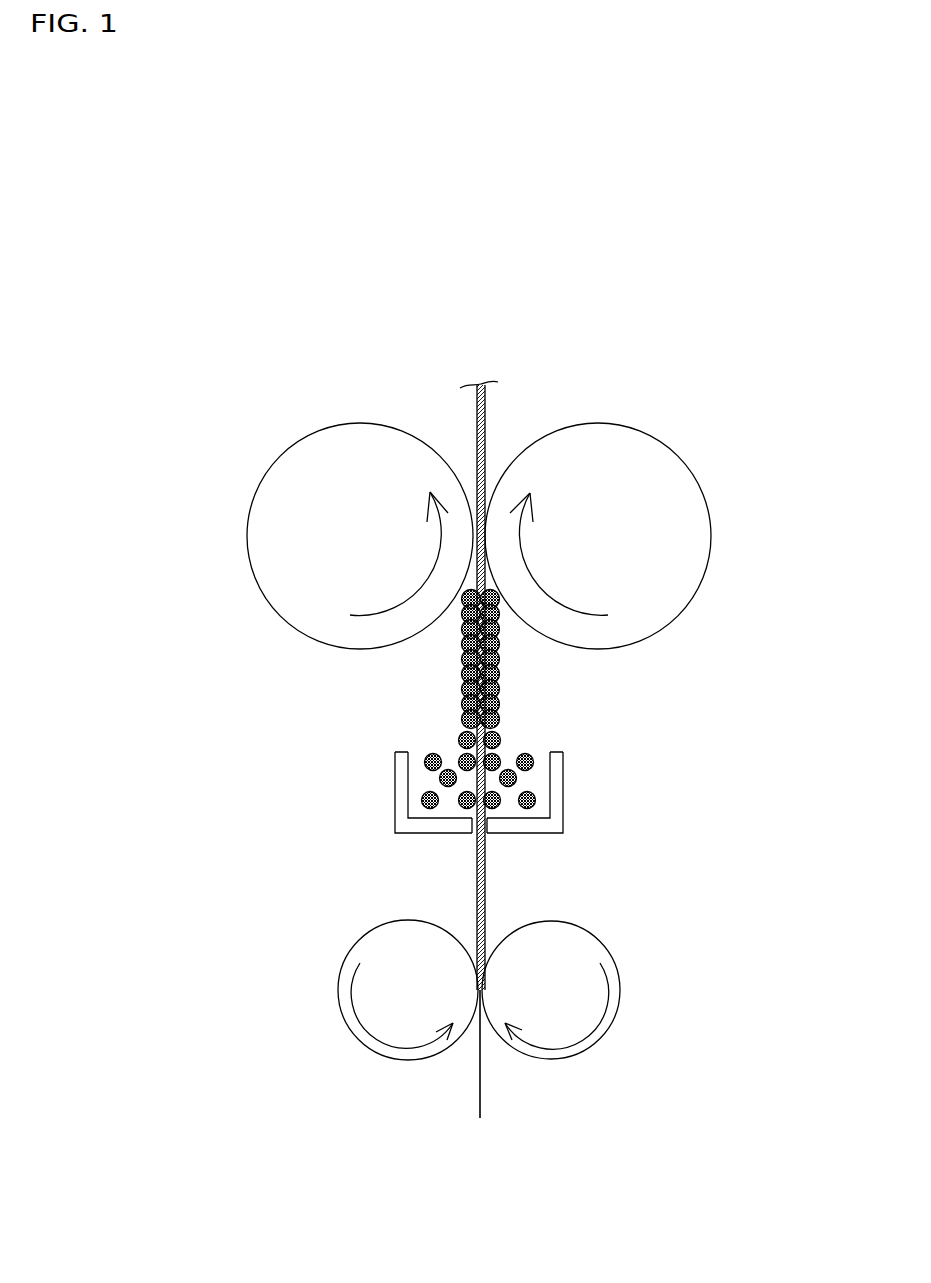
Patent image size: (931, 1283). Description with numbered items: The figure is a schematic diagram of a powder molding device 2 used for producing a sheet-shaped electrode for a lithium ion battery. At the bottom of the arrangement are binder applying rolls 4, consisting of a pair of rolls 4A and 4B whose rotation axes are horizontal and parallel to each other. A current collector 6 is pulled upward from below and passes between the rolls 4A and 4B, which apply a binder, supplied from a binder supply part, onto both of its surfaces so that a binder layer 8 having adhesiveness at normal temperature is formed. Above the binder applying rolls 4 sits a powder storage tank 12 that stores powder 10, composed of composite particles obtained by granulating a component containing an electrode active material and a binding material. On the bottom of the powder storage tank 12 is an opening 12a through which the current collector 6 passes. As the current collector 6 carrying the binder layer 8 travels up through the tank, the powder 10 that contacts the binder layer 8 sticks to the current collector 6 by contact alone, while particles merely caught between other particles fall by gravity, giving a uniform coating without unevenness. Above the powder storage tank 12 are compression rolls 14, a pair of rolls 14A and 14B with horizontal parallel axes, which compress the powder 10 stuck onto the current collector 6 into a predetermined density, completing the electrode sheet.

The powder molding device 2 is at (615, 305).
The binder applying rolls 4 is at (660, 983).
The roll 4A is at (392, 940).
The roll 4B is at (590, 958).
The current collector 6 is at (482, 1093).
The binder layer 8 is at (475, 897).
The powder 10 is at (443, 740).
The powder storage tank 12 is at (563, 781).
The opening 12a is at (493, 847).
The compression rolls 14 is at (687, 398).
The roll 14A is at (312, 458).
The roll 14B is at (680, 493).